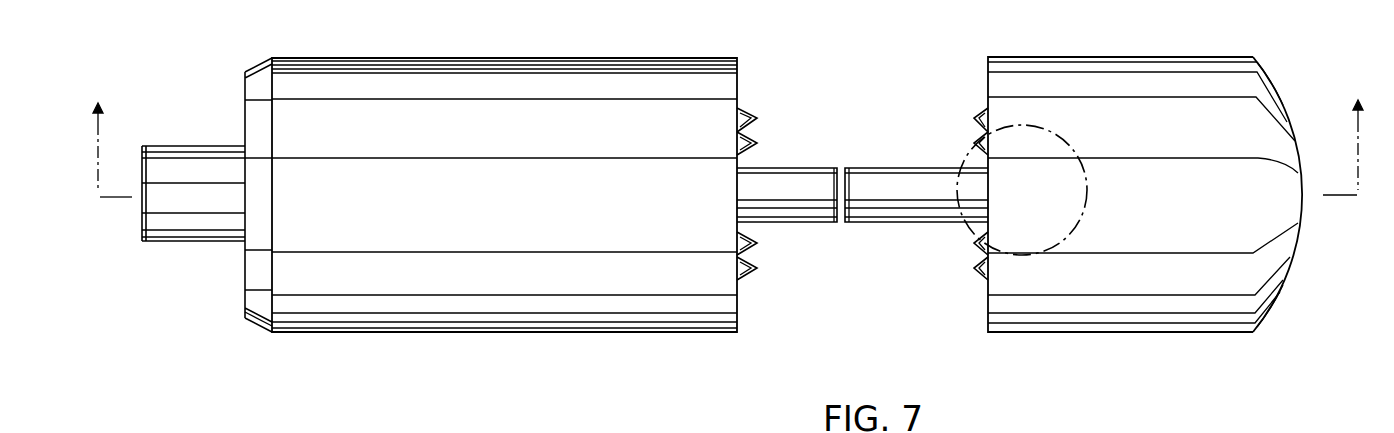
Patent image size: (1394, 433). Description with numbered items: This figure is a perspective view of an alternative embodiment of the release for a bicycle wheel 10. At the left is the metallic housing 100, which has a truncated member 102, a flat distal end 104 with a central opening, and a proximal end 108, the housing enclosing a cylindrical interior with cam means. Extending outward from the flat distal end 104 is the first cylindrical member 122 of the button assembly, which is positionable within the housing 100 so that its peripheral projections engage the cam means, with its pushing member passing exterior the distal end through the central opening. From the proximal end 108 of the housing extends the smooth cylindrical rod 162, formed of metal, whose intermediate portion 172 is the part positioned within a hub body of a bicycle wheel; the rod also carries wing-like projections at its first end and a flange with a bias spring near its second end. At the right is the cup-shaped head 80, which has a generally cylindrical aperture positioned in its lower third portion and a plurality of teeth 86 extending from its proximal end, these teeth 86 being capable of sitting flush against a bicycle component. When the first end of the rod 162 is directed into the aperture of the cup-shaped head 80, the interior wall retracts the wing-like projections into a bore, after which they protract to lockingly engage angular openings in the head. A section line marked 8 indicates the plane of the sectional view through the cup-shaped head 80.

The metallic housing 100 is at (523, 58).
The flat distal end 104 is at (245, 114).
The first cylindrical member 122 is at (197, 242).
The truncated member 102 is at (248, 318).
The proximal end 108 is at (738, 73).
The teeth 86 is at (746, 117).
The intermediate portion 172 is at (788, 222).
The smooth cylindrical rod 162 is at (890, 165).
The release for a bicycle wheel 10 is at (975, 228).
The cup-shaped head 80 is at (1120, 57).
The section line 8- 8 is at (728, 134).